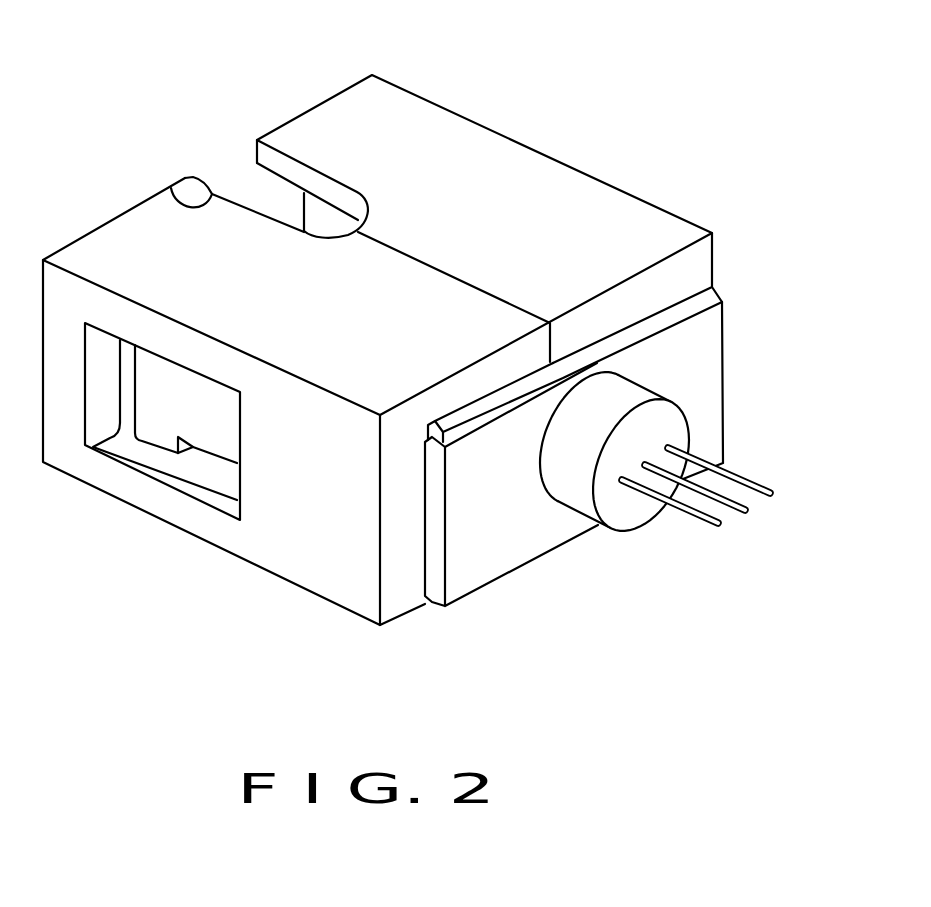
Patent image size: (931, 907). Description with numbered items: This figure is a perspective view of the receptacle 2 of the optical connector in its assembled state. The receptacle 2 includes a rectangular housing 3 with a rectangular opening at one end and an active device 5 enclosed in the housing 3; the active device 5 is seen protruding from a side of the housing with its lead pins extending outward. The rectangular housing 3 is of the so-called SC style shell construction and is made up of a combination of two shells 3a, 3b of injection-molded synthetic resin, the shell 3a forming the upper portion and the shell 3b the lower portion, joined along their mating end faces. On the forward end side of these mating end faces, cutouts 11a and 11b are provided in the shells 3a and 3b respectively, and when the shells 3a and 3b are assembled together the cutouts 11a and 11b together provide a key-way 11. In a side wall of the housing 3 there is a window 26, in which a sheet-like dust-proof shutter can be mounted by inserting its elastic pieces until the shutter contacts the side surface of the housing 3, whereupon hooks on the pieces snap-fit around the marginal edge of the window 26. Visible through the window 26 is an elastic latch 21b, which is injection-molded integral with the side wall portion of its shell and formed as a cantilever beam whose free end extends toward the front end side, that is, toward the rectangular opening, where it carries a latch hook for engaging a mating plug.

The receptacle 2 is at (593, 137).
The rectangular housing 3 is at (598, 228).
The shell 3a is at (462, 157).
The shell 3b is at (290, 556).
The active device 5 is at (648, 423).
The key-way 11 is at (249, 182).
The cutout 11a is at (300, 170).
The cutout 11b is at (170, 192).
The elastic latch 21b is at (200, 406).
The window 26 is at (198, 467).